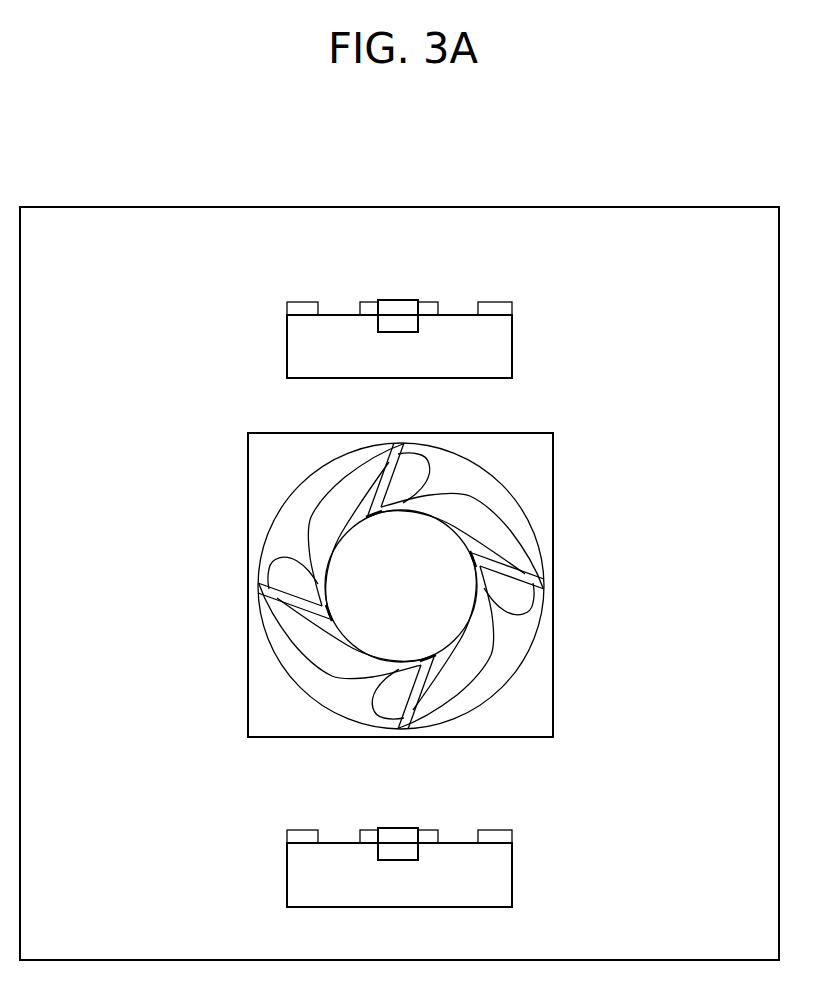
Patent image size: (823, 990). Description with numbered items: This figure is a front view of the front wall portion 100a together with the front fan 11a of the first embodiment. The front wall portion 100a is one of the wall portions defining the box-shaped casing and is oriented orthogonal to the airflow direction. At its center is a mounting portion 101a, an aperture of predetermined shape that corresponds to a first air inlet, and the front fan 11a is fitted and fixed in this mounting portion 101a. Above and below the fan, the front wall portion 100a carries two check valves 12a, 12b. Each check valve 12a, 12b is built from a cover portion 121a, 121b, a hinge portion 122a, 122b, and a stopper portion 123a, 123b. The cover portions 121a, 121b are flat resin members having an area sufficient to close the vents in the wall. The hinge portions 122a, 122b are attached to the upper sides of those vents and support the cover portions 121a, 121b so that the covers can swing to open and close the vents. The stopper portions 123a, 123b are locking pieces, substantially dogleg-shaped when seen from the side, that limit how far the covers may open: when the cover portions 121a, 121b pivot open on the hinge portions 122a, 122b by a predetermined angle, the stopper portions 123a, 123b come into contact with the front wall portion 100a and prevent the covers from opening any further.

The front wall portion 100a is at (615, 173).
The front fan 11a is at (387, 585).
The mounting portion 101a is at (248, 625).
The check valve 12a is at (410, 318).
The cover portion 121a is at (287, 350).
The hinge portion 122a is at (312, 302).
The stopper portion 123a is at (398, 323).
The check valve 12b is at (409, 846).
The cover portion 121b is at (287, 878).
The hinge portion 122b is at (312, 830).
The stopper portion 123b is at (398, 851).